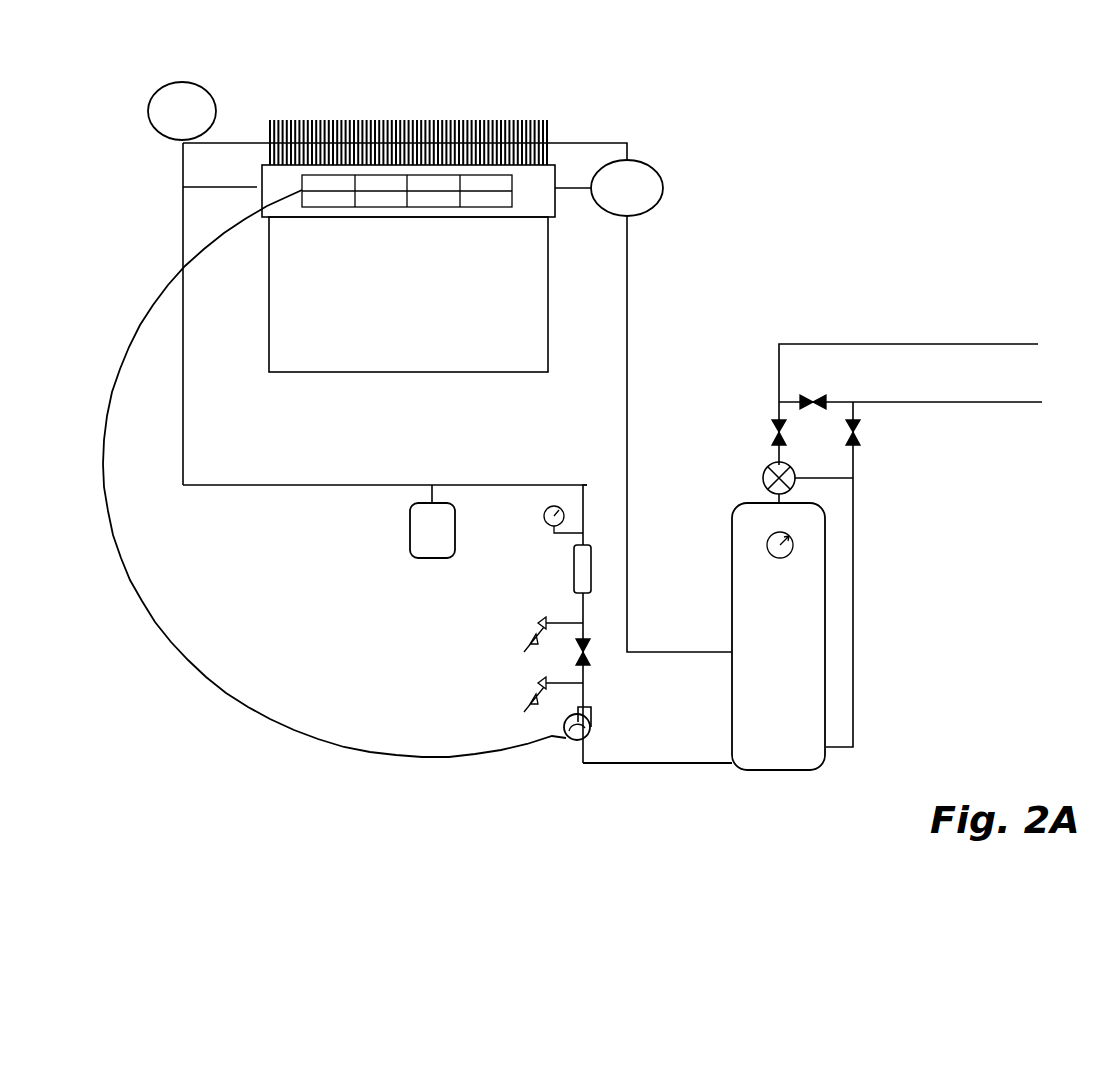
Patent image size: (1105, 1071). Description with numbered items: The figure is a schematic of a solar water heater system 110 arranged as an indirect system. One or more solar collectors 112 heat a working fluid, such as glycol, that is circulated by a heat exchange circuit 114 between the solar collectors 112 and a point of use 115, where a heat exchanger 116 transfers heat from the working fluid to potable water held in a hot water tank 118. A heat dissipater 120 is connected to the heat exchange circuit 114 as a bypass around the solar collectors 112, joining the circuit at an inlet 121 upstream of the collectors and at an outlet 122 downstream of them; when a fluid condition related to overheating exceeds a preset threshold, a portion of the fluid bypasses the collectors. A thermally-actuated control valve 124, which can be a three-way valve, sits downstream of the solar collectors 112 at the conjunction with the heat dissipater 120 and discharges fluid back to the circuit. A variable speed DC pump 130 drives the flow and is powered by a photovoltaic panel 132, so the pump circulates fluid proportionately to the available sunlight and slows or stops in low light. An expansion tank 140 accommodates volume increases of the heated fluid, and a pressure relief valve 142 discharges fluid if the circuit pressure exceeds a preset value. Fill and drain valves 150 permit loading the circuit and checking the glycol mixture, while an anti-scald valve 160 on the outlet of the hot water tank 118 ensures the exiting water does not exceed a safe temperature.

The solar water heater system 110 is at (747, 188).
The solar collectors 112 is at (408, 294).
The heat exchange circuit 114 is at (627, 300).
The point of use 115 is at (925, 605).
The heat exchanger 116 is at (778, 636).
The hot water tank 118 is at (826, 718).
The heat dissipater 120 is at (408, 120).
The inlet 121 is at (183, 153).
The outlet 122 is at (563, 143).
The thermally-actuated control valve 124 is at (632, 160).
The variable speed DC pump 130 is at (592, 733).
The photovoltaic panel 132 is at (262, 199).
The expansion tank 140 is at (410, 532).
The pressure relief valve 142 is at (197, 82).
The fill and drain valves 150 is at (517, 567).
The anti-scald valve 160 is at (763, 478).